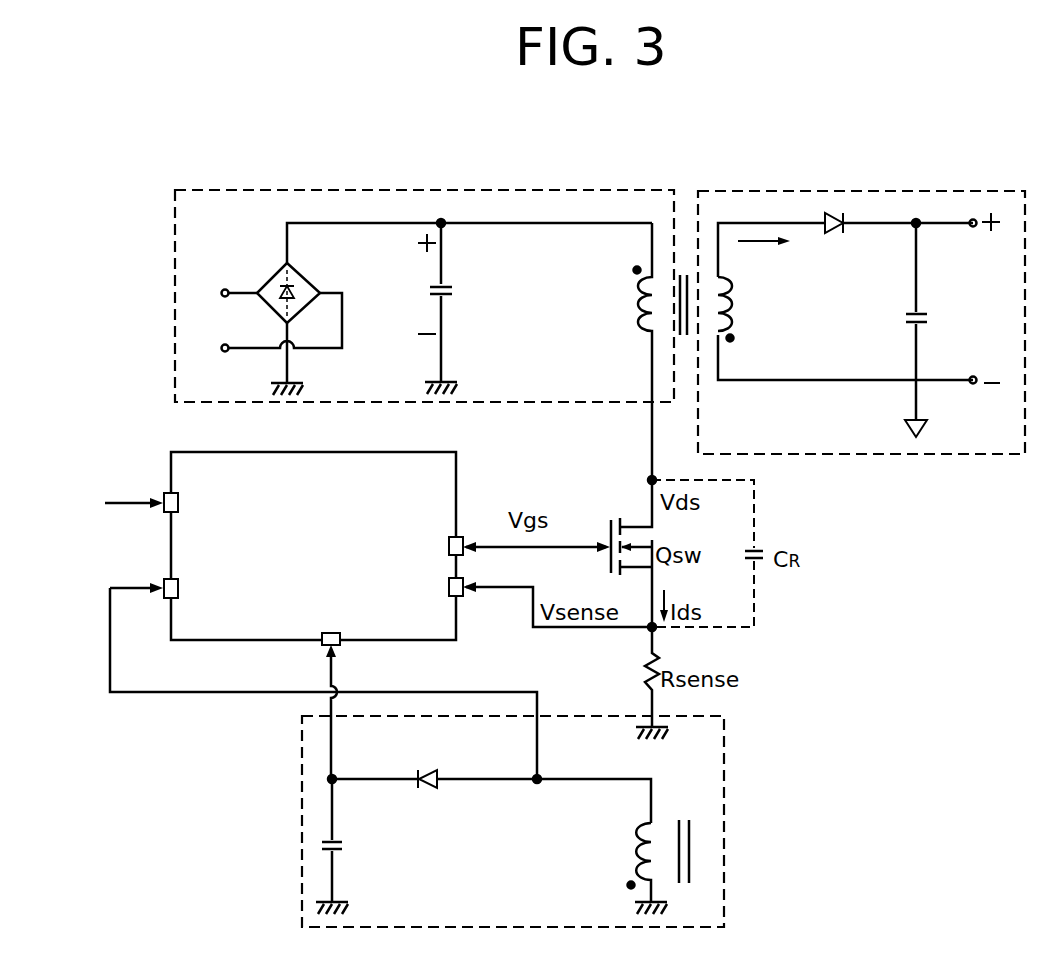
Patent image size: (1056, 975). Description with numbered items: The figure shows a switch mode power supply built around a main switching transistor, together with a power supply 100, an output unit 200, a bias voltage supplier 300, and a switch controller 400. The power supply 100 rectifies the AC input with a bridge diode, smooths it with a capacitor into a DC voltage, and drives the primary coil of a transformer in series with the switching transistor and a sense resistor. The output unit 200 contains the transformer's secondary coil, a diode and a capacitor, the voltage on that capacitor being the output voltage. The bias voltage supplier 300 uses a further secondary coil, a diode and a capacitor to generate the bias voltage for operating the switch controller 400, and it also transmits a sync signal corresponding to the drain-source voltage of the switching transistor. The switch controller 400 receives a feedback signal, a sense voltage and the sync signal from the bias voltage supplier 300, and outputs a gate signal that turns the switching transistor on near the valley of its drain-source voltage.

The power supply 100 is at (175, 290).
The output unit 200 is at (975, 454).
The bias voltage supplier 300 is at (724, 785).
The switch controller 400 is at (171, 457).